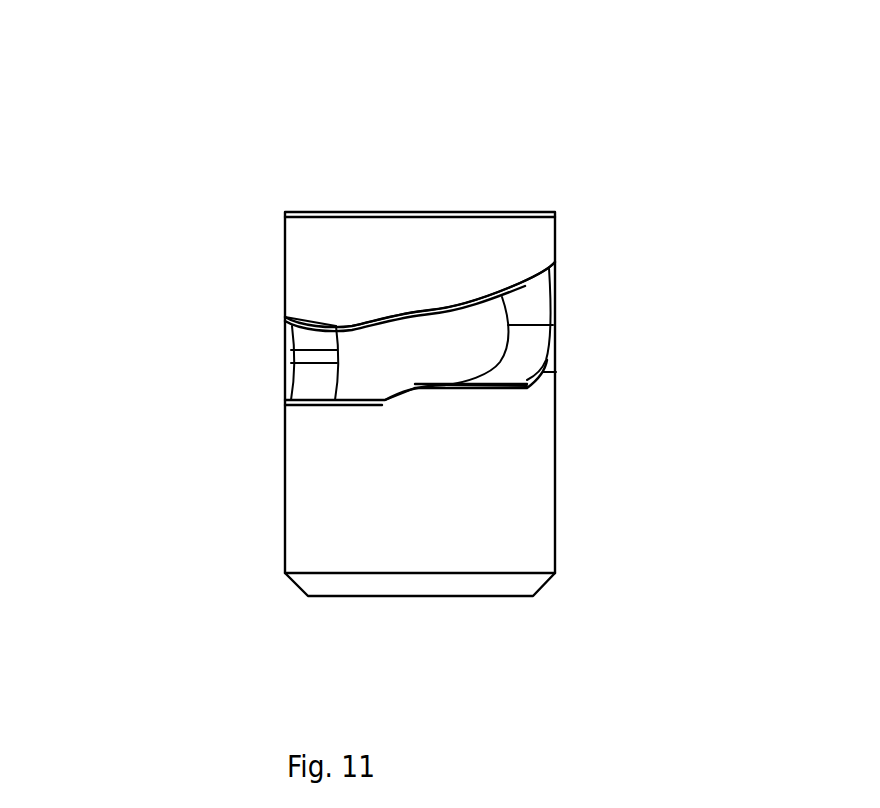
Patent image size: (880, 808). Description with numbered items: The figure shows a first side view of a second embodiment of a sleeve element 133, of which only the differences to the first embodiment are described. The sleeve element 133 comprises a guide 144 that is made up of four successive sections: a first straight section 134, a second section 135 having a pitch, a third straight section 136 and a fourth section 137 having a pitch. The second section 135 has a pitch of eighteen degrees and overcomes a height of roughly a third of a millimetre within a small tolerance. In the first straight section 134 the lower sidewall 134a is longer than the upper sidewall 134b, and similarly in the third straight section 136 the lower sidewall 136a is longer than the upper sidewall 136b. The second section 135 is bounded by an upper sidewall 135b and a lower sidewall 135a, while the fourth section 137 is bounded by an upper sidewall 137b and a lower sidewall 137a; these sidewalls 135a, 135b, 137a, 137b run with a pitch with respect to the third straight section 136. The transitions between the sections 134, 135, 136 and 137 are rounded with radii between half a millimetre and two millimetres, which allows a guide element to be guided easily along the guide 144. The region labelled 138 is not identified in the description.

The sleeve element 133 is at (185, 133).
The first straight section 134 is at (336, 402).
The lower sidewall 134a is at (312, 400).
The upper sidewall 134b is at (285, 318).
The second section 135 is at (381, 400).
The lower sidewall 135a is at (397, 403).
The upper sidewall 135b is at (388, 317).
The third straight section 136 is at (450, 388).
The lower sidewall 136a is at (507, 388).
The upper sidewall 136b is at (430, 309).
The fourth section 137 is at (555, 349).
The lower sidewall 137a is at (555, 372).
The upper sidewall 137b is at (492, 297).
The top surface 138 is at (555, 281).
The guide 144 is at (288, 362).